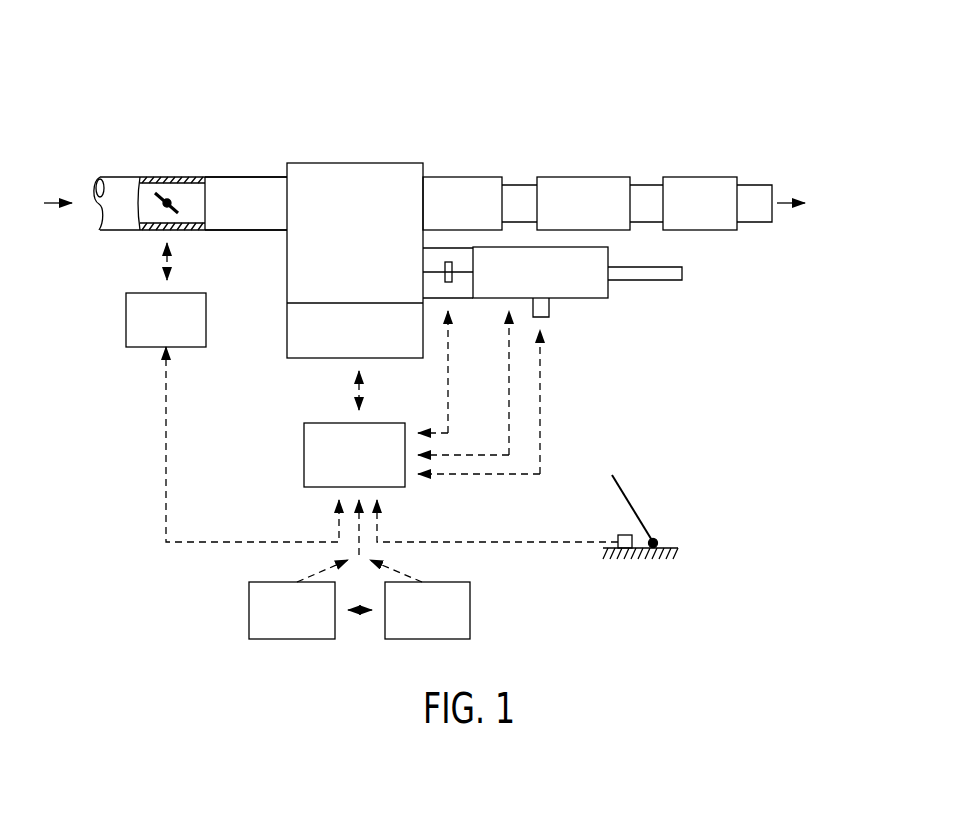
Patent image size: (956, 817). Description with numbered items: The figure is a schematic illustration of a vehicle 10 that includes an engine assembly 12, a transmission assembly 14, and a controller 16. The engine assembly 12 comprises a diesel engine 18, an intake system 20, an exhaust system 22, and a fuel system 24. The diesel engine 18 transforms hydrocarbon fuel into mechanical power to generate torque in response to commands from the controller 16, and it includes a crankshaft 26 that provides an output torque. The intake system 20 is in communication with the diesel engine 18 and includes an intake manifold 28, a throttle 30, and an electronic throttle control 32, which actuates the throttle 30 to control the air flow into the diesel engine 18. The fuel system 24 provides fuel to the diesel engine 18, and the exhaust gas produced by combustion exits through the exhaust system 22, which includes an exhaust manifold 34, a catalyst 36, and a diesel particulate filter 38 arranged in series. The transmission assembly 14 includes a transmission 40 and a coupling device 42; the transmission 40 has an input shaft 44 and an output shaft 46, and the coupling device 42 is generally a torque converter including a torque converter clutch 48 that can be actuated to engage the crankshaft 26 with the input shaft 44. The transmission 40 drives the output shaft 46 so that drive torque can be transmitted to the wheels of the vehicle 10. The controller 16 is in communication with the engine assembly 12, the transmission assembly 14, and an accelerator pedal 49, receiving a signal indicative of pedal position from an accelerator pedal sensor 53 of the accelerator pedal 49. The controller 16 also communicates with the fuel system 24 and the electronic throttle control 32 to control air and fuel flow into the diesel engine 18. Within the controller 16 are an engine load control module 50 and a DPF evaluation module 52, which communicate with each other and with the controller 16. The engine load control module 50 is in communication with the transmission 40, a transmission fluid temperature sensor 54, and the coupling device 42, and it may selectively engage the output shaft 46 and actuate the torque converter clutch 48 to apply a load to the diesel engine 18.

The vehicle 10 is at (96, 74).
The engine assembly 12 is at (220, 144).
The transmission assembly 14 is at (611, 352).
The controller 16 is at (304, 476).
The diesel engine 18 is at (355, 170).
The intake system 20 is at (224, 244).
The exhaust system 22 is at (560, 129).
The fuel system 24 is at (287, 345).
The crankshaft 26 is at (437, 274).
The intake manifold 28 is at (248, 177).
The throttle 30 is at (156, 194).
The electronic throttle control 32 is at (126, 321).
The exhaust manifold 34 is at (475, 177).
The catalyst 36 is at (608, 177).
The diesel particulate filter 38 is at (715, 177).
The transmission 40 is at (602, 299).
The coupling device 42 is at (454, 292).
The input shaft 44 is at (463, 273).
The output shaft 46 is at (683, 274).
The torque converter clutch 48 is at (449, 277).
The accelerator pedal 49 is at (636, 512).
The engine load control module 50 is at (249, 608).
The DPF evaluation module 52 is at (470, 608).
The accelerator pedal sensor 53 is at (621, 535).
The transmission fluid temperature sensor 54 is at (548, 318).